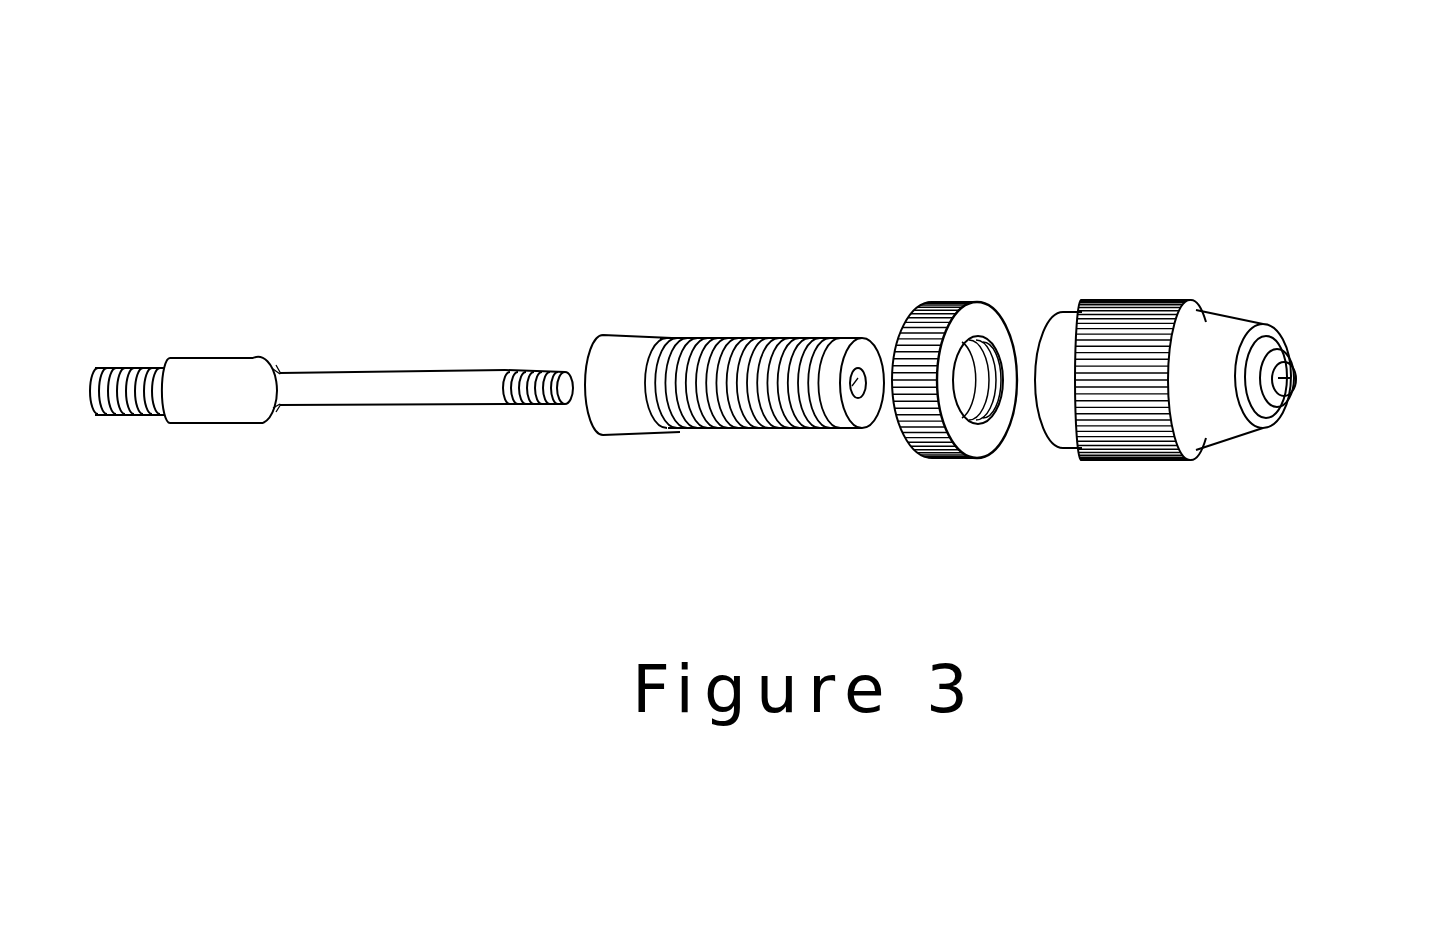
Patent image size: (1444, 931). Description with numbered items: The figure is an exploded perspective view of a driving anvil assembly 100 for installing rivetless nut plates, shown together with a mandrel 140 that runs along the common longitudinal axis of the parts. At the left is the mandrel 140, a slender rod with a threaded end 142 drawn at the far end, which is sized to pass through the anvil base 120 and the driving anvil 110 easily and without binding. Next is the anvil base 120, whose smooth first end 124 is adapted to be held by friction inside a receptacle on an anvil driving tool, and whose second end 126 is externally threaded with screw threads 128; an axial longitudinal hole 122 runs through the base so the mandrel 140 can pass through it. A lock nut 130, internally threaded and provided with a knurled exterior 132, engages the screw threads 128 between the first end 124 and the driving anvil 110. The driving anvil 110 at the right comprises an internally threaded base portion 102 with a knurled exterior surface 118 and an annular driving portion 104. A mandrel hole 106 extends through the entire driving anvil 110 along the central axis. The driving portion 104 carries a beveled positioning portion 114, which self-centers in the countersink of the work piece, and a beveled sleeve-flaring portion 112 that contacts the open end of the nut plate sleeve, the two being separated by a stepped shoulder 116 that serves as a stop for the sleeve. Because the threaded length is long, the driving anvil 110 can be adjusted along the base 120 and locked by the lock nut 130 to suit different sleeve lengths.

The driving anvil assembly 100 is at (758, 123).
The driving anvil 110 is at (1187, 118).
The base portion 102 is at (1062, 315).
The driving portion 104 is at (1240, 318).
The mandrel hole 106 is at (1283, 378).
The sleeve-flaring portion 112 is at (1283, 368).
The positioning portion 114 is at (1258, 410).
The stepped shoulder 116 is at (1290, 400).
The knurled exterior surface 118 is at (1160, 455).
The anvil base 120 is at (675, 338).
The axial longitudinal hole 122 is at (868, 375).
The first end 124 is at (596, 425).
The second end 126 is at (851, 425).
The screw threads 128 is at (755, 430).
The lock nut 130 is at (990, 432).
The knurled exterior 132 is at (945, 460).
The mandrel 140 is at (365, 385).
The threaded end 142 is at (550, 370).